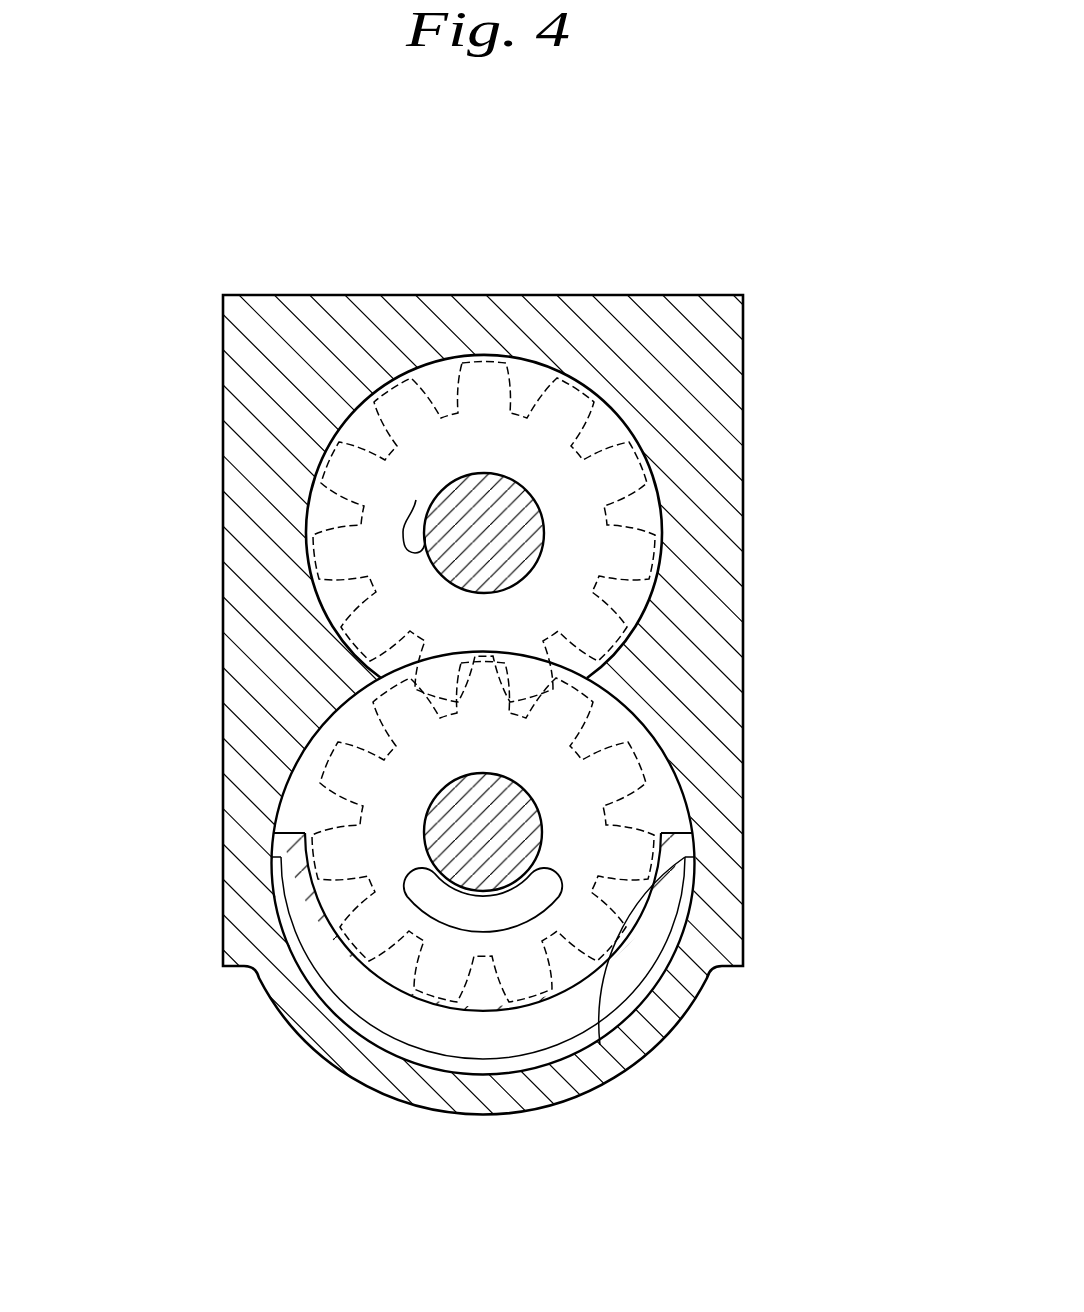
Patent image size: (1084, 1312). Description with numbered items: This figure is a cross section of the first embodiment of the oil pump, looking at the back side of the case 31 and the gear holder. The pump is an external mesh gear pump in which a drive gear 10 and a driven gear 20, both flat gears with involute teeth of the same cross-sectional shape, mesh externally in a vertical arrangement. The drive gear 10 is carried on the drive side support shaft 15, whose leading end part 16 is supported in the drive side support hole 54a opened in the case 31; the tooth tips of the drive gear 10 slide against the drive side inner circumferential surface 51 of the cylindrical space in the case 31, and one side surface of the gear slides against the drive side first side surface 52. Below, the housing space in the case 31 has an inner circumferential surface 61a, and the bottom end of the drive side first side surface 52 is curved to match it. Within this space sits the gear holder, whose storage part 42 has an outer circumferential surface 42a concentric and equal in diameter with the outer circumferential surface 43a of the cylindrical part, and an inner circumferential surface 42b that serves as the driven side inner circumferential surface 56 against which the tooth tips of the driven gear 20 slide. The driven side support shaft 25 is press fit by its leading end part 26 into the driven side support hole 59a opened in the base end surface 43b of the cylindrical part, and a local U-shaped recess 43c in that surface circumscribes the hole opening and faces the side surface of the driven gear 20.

The drive gear 10 is at (538, 360).
The drive side support shaft 15 is at (668, 533).
The leading end part 16 is at (513, 543).
The driven gear 20 is at (250, 778).
The driven side support shaft 25 is at (311, 764).
The leading end part 26 is at (455, 782).
The case 31 is at (299, 294).
The storage part 42 is at (440, 1053).
The outer circumferential surface 42a is at (700, 857).
The inner circumferential surface 42b is at (768, 951).
The outer circumferential surface 43a is at (274, 808).
The base end surface 43b is at (799, 795).
The U-shaped recess 43c is at (377, 982).
The drive side inner circumferential surface 51 is at (426, 370).
The drive side first side surface 52 is at (612, 428).
The drive side support hole 54a is at (416, 500).
The driven side inner circumferential surface 56 is at (672, 892).
The driven side support hole 59a is at (446, 806).
The inner circumferential surface 61a is at (622, 735).